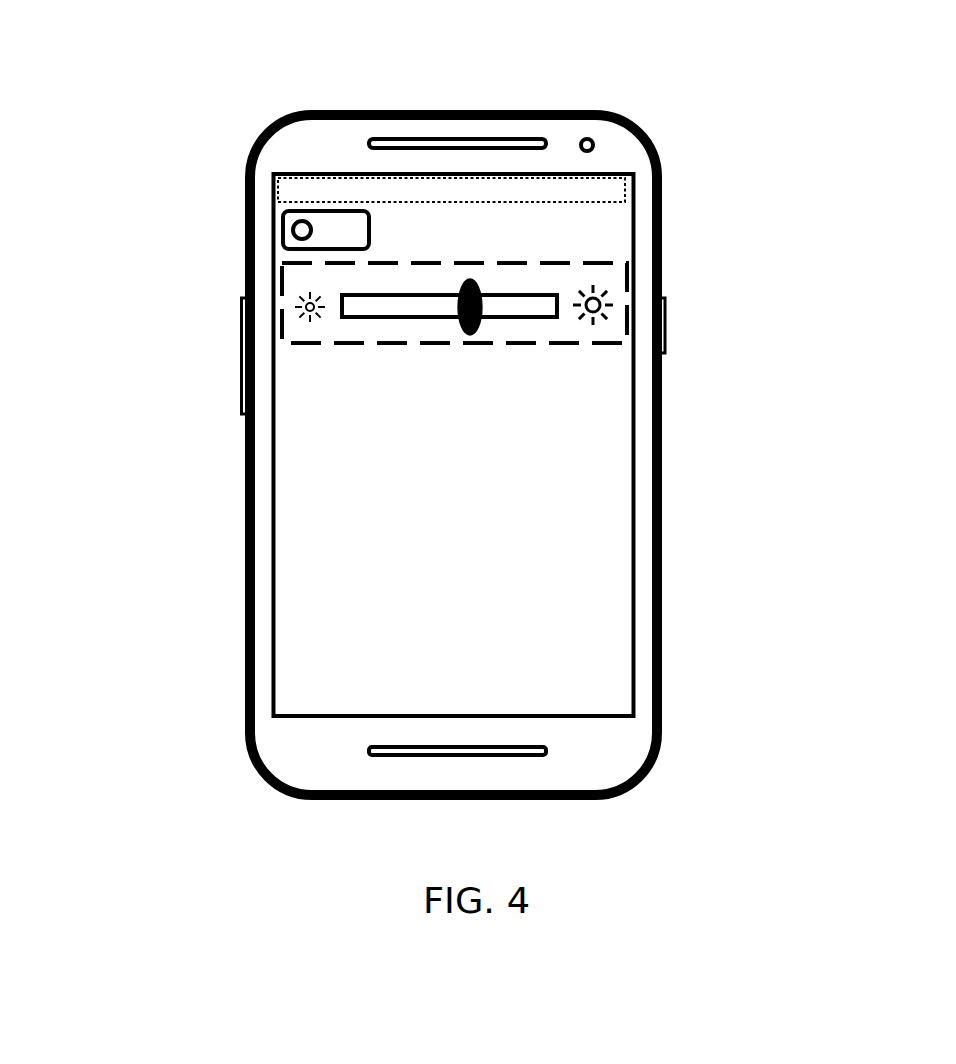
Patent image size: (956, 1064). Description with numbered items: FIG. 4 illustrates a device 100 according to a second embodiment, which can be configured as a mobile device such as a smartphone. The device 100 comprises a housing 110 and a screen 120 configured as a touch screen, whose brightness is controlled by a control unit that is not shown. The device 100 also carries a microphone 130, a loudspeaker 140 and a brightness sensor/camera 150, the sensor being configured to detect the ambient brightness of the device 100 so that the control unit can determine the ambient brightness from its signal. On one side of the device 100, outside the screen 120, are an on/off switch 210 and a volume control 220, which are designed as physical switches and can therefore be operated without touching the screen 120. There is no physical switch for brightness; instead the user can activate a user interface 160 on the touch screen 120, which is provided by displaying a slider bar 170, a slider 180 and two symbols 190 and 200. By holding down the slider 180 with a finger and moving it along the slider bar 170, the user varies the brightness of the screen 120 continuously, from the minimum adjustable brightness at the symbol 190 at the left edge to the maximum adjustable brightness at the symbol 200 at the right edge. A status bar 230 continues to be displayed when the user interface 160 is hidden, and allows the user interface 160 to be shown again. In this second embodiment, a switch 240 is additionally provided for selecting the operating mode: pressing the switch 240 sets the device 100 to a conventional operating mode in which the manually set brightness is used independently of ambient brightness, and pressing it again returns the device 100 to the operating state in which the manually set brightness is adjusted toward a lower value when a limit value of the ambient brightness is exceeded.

The device 100 is at (447, 467).
The housing 110 is at (243, 585).
The screen 120 is at (633, 443).
The microphone 130 is at (390, 760).
The loudspeaker 140 is at (443, 133).
The brightness sensor/camera 150 is at (582, 133).
The user interface 160 is at (585, 250).
The slider bar 170 is at (527, 317).
The slider 180 is at (462, 284).
The symbol for minimum brightness 190 is at (293, 292).
The symbol for maximum brightness 200 is at (617, 282).
The on/off switch 210 is at (667, 320).
The volume control 220 is at (242, 373).
The status bar 230 is at (600, 187).
The switch for selecting the operating mode 240 is at (282, 207).